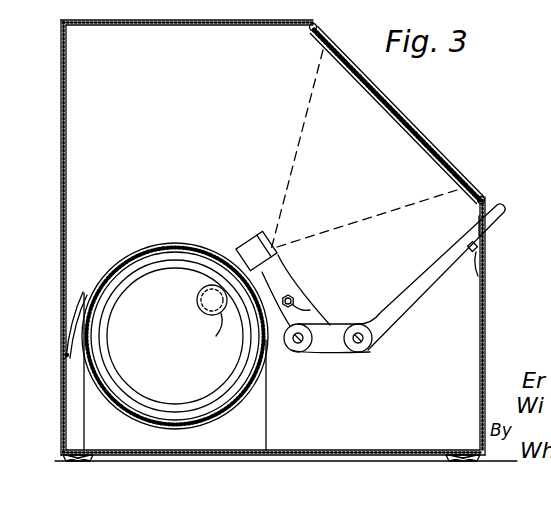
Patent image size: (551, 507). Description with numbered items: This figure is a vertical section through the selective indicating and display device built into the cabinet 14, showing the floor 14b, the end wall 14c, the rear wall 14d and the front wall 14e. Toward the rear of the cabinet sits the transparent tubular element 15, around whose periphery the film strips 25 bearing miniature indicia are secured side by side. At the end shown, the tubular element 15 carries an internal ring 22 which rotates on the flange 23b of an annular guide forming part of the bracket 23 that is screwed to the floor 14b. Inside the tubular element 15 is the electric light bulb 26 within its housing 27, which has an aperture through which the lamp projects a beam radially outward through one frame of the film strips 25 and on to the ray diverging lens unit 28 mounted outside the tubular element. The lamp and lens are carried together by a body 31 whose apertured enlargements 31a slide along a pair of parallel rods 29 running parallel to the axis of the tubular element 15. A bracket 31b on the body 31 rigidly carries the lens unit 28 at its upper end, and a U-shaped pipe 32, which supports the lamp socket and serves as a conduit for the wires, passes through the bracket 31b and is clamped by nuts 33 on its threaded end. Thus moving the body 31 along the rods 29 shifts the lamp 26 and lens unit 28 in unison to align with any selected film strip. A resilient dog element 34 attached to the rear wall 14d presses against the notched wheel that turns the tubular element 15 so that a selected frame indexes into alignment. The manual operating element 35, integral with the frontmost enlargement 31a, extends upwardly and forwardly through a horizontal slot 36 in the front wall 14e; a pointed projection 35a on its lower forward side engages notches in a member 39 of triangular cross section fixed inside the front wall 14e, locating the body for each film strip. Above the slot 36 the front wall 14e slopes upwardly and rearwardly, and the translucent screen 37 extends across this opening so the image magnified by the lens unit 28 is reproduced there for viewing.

The cabinet 14 is at (281, 230).
The floor 14b is at (330, 450).
The end wall 14c is at (168, 42).
The rear wall 14d is at (67, 110).
The front wall 14e is at (486, 300).
The tubular element 15 is at (147, 245).
The ring 22 is at (122, 398).
The bracket 23 is at (266, 415).
The flange 23b is at (108, 358).
The film strips 25 is at (173, 244).
The electric light bulb 26 is at (197, 301).
The housing 27 is at (215, 322).
The ray diverging lens unit 28 is at (261, 240).
The parallel rods 29 is at (304, 339).
The body 31 is at (318, 312).
The enlargements 31a is at (345, 352).
The bracket 31b is at (280, 279).
The pipe 32 is at (292, 299).
The nuts 33 is at (296, 305).
The resilient dog element 34 is at (88, 292).
The manual operating element 35 is at (435, 274).
The pointed projection 35a is at (470, 246).
The slot 36 is at (486, 235).
The screen 37 is at (405, 130).
The member of triangular cross section 39 is at (475, 260).